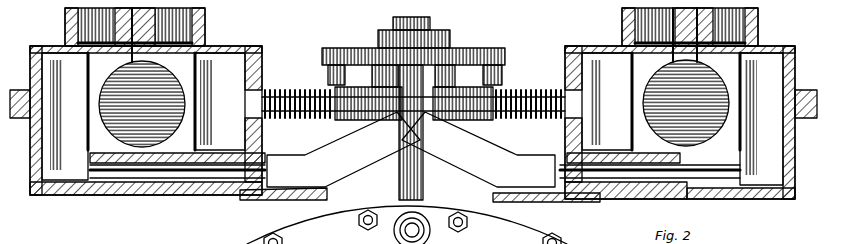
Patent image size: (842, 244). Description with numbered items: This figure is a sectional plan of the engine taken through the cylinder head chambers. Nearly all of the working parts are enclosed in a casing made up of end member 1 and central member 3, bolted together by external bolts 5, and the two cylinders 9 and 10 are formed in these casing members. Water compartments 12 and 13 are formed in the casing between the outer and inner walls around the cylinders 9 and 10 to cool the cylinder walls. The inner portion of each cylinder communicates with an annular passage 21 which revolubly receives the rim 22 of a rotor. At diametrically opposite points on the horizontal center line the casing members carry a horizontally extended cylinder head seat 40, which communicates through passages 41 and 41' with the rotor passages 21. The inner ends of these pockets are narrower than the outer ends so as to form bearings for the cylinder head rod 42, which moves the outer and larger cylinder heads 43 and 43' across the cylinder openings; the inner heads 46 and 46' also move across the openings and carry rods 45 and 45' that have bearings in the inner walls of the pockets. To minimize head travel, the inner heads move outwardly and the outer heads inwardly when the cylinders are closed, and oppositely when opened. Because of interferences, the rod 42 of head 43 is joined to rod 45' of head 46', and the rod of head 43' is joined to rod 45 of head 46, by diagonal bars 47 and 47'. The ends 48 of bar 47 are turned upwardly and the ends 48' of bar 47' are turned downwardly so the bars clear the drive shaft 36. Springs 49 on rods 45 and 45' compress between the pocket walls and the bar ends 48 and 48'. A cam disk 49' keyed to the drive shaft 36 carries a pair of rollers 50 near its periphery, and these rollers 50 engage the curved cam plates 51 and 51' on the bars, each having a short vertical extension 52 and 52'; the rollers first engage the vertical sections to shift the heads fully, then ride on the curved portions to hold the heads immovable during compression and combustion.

The end member 1 is at (333, 197).
The central member 3 is at (145, 24).
The external bolt 5 is at (358, 223).
The cylinder 9 is at (142, 104).
The cylinder 10 is at (686, 103).
The water compartment 12 is at (182, 30).
The water compartment 13 is at (70, 12).
The annular passage 21 is at (131, 40).
The rim 22 is at (70, 35).
The drive shaft 36 is at (410, 172).
The cylinder head seat 40 is at (112, 141).
The passage 41 is at (96, 83).
The passage 41' is at (688, 122).
The cylinder head rod 42 is at (143, 173).
The outer cylinder head 43 is at (64, 115).
The outer cylinder head 43' is at (757, 117).
The rod 45 is at (220, 75).
The rod 45' is at (416, 97).
The inner head 46 is at (204, 100).
The inner head 46' is at (608, 107).
The diagonal bar 47 is at (343, 149).
The diagonal bar 47' is at (478, 149).
The turned-up end 48 is at (369, 119).
The turned-down end 48' is at (434, 122).
The spring 49 is at (525, 72).
The cross bar 49' is at (386, 83).
The roller 50 is at (482, 65).
The curved cam plate 51 is at (427, 35).
The curved cam plate 51' is at (311, 75).
The vertical extension 52 is at (425, 20).
The vertical extension 52' is at (373, 69).